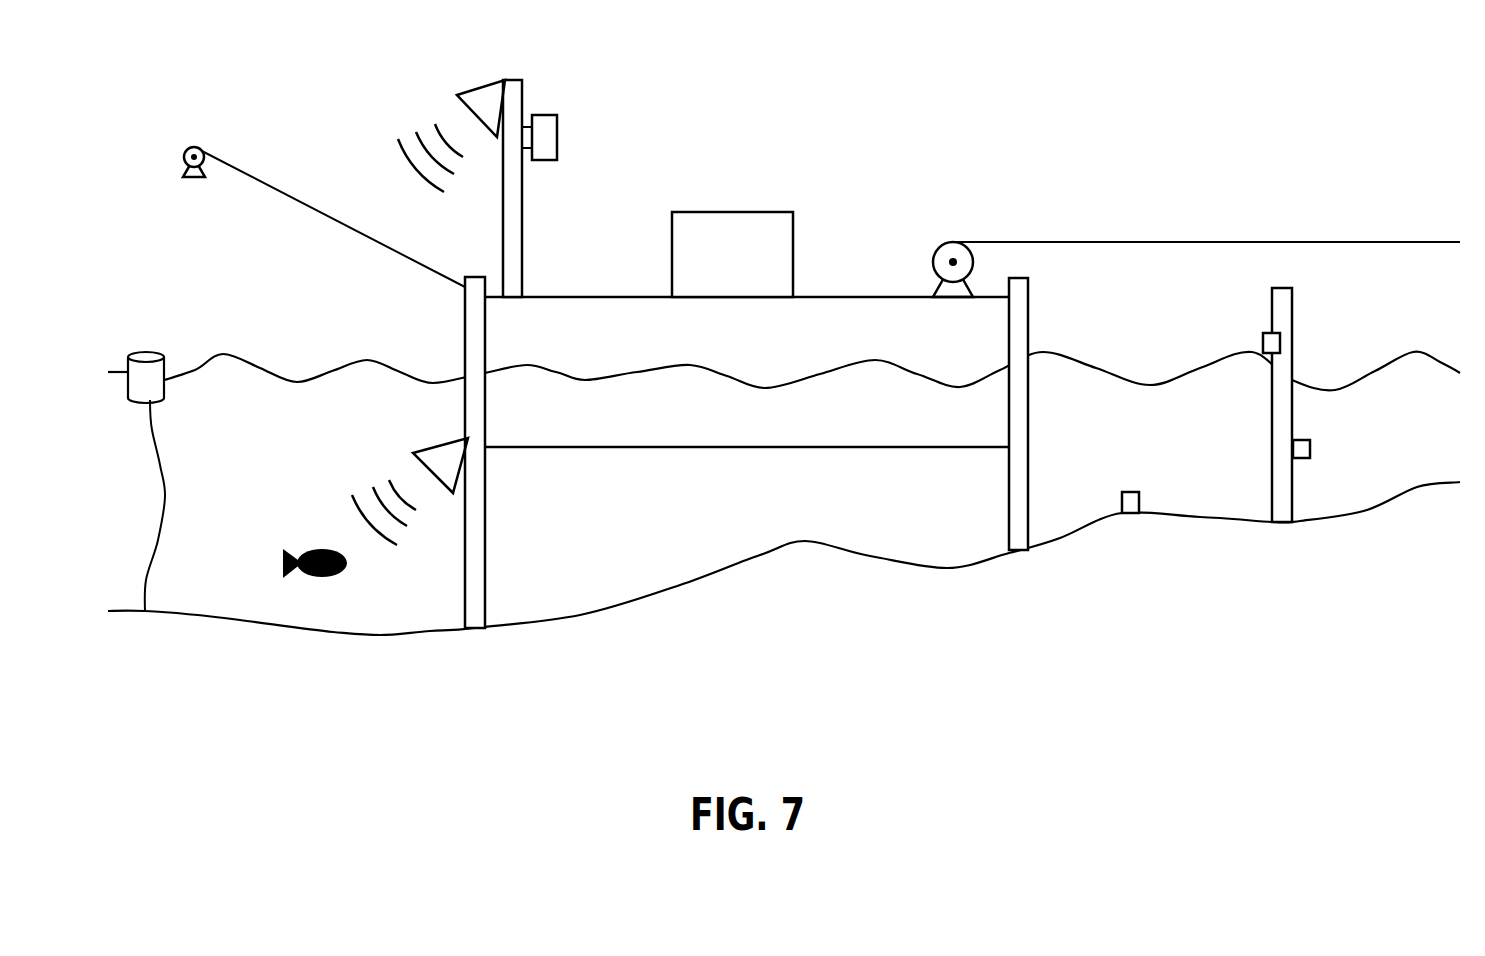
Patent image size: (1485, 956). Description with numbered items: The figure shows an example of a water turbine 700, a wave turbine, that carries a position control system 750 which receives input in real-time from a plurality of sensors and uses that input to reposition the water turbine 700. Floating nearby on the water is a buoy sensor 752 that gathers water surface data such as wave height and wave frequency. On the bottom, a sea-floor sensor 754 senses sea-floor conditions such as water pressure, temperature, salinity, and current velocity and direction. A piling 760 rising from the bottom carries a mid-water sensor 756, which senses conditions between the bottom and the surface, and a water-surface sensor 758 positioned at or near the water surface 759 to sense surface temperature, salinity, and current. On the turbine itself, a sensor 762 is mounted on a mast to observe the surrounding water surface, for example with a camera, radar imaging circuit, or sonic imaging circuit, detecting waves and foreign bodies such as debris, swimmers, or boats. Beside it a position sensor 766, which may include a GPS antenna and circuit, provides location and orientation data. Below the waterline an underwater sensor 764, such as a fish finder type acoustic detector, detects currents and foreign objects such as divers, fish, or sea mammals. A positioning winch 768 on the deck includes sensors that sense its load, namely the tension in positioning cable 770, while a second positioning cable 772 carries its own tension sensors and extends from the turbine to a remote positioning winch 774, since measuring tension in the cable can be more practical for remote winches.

The water turbine 700 is at (614, 305).
The position control system 750 is at (763, 212).
The buoy sensor 752 is at (140, 355).
The sea-floor sensor 754 is at (1122, 492).
The mid-water sensor 756 is at (1312, 453).
The water-surface sensor 758 is at (1262, 343).
The water surface 759 is at (1432, 352).
The piling 760 is at (1292, 306).
The sensor 762 is at (485, 95).
The underwater sensor 764 is at (423, 453).
The position sensor 766 is at (545, 115).
The positioning winch 768 is at (950, 245).
The positioning cable 770 is at (1137, 242).
The positioning cable 772 is at (373, 233).
The remote positioning winch 774 is at (195, 147).